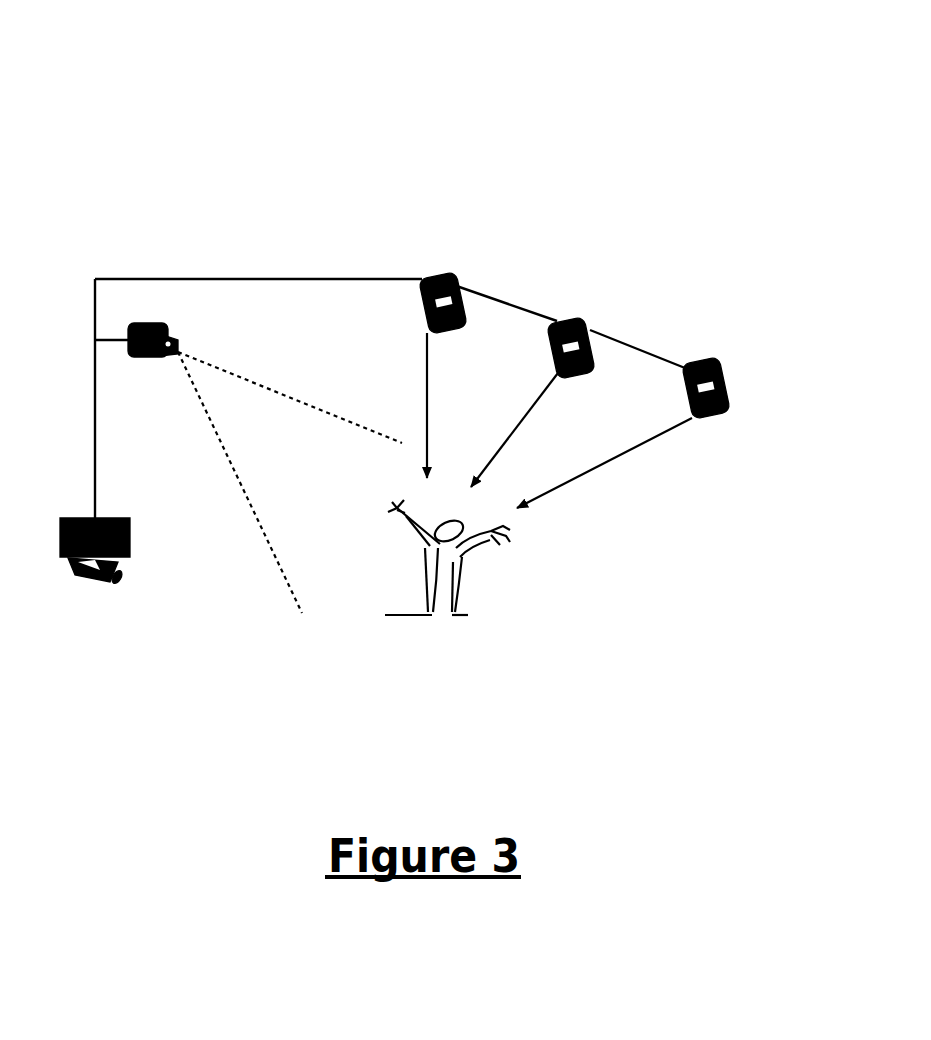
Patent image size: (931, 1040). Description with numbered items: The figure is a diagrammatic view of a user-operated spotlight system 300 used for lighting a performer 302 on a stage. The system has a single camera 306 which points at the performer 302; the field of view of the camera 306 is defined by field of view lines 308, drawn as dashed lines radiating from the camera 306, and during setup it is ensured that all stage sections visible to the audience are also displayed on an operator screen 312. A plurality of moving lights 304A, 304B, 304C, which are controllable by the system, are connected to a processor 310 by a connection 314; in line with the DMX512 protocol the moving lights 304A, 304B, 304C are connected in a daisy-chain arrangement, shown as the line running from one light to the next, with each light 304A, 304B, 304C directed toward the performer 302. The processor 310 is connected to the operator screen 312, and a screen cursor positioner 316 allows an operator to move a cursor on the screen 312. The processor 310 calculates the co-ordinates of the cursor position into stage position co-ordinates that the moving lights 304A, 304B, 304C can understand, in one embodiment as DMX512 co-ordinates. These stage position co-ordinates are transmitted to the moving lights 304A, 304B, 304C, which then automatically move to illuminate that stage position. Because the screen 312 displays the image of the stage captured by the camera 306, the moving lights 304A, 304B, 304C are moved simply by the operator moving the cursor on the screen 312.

The user-operated spotlight system 300 is at (131, 148).
The performer 302 is at (445, 565).
The moving light 304A is at (460, 298).
The moving light 304B is at (592, 330).
The moving light 304C is at (722, 362).
The camera 306 is at (153, 355).
The field of view lines 308 is at (296, 402).
The processor 310 is at (73, 518).
The operator screen 312 is at (123, 553).
The connection 314 is at (305, 278).
The screen cursor positioner 316 is at (112, 588).